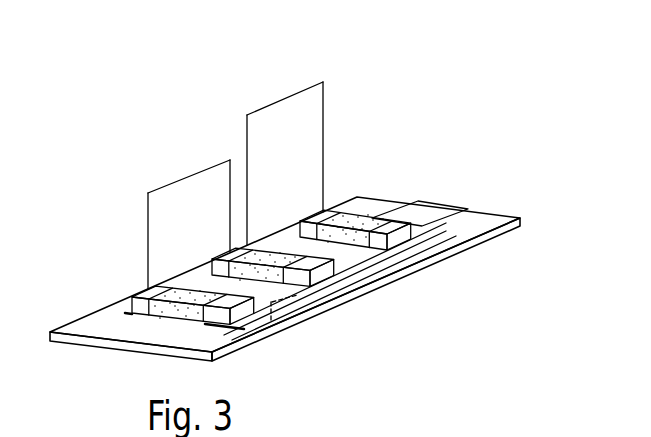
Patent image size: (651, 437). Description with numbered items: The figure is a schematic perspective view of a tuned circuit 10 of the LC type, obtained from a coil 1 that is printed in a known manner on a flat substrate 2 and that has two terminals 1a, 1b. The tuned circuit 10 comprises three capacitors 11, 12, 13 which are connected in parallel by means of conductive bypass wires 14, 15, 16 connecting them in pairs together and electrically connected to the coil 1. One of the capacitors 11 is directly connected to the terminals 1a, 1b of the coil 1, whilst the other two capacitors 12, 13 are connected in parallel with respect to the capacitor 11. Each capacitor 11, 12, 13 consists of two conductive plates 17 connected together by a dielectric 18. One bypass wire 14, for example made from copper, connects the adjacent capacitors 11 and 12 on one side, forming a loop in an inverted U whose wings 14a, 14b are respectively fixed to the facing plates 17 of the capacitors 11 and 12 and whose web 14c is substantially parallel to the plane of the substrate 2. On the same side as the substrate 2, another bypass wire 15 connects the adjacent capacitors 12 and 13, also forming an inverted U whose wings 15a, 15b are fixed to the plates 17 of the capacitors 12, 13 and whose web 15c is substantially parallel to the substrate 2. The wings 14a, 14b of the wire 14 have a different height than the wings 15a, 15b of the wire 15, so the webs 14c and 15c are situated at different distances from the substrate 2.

The coil 1 is at (446, 228).
The terminal 1a is at (125, 314).
The terminal 1b is at (243, 329).
The substrate 2 is at (110, 350).
The tuned circuit 10 is at (440, 305).
The capacitor 11 is at (122, 278).
The capacitor 12 is at (208, 238).
The capacitor 13 is at (393, 210).
The bypass wire 14 is at (152, 179).
The wing 14a is at (148, 222).
The wing 14b is at (233, 200).
The web 14c is at (168, 187).
The bypass wire 15 is at (313, 122).
The wing 15a is at (247, 147).
The wing 15b is at (323, 152).
The web 15c is at (293, 95).
The bypass wire 16 is at (352, 264).
The conductive plate 17 is at (337, 208).
The dielectric 18 is at (411, 200).